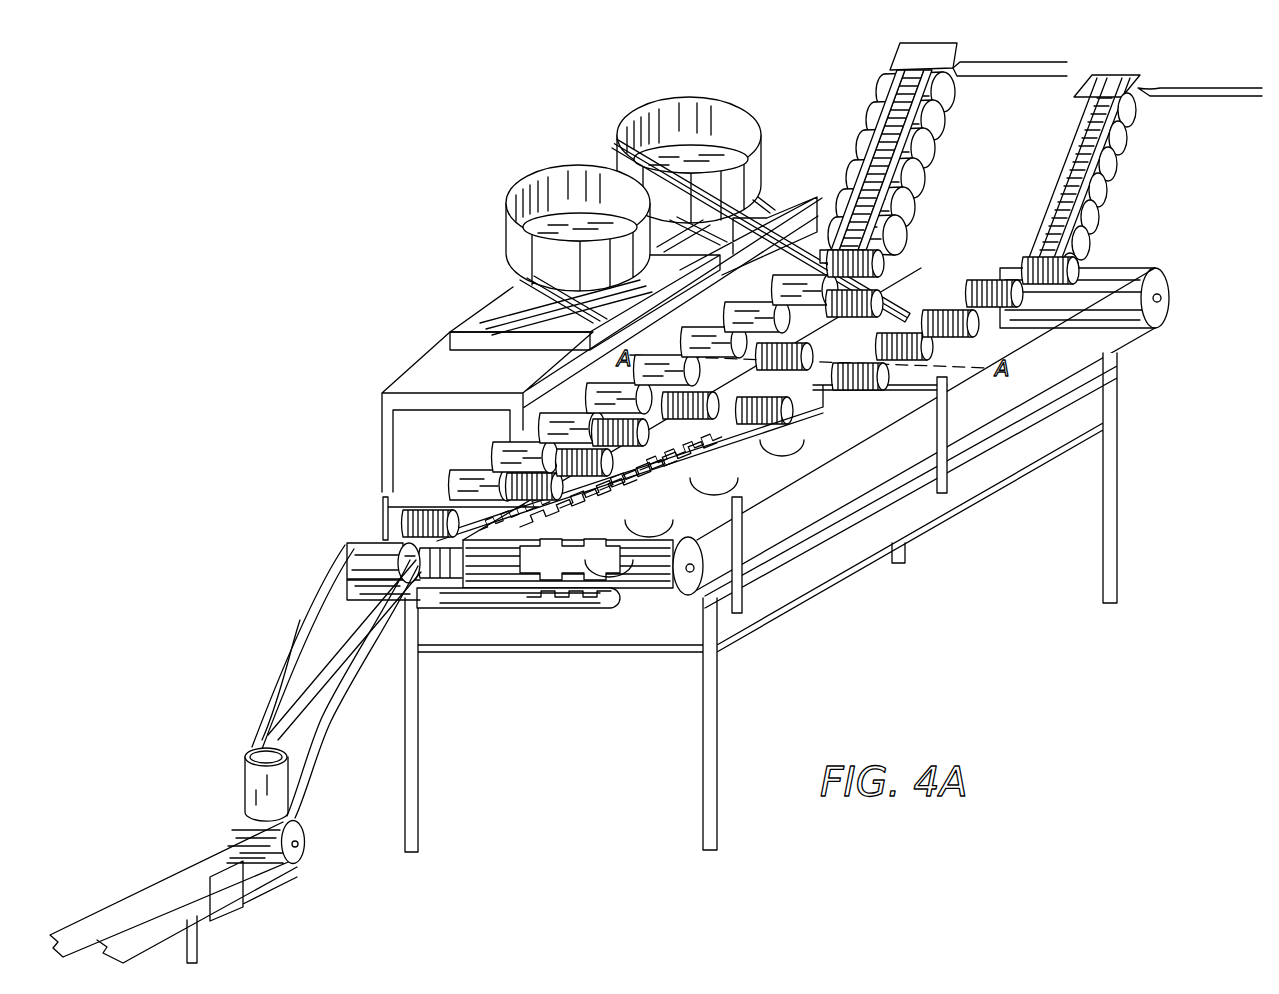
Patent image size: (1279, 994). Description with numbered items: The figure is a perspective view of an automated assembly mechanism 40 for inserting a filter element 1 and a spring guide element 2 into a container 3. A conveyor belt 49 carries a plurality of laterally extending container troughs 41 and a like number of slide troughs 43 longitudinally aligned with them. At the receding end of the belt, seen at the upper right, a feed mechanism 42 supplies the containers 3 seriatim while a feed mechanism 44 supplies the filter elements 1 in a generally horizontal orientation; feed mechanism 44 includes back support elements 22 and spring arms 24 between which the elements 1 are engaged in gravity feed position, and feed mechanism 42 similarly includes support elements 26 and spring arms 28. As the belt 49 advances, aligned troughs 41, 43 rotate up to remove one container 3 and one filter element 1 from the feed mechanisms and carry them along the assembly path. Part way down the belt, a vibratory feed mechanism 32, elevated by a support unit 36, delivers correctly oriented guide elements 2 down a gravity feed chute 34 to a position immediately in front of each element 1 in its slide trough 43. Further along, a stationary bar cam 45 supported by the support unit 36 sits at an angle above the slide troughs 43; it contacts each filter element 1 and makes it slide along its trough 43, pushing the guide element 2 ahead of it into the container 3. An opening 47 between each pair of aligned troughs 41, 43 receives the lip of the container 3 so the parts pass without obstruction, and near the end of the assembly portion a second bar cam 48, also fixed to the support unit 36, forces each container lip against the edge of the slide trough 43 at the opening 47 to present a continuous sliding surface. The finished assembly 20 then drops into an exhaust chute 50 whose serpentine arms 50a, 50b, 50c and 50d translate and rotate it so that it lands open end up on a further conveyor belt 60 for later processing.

The filter element 1 is at (1128, 212).
The guide element 2 is at (668, 393).
The container 3 is at (942, 179).
The assembly 20 is at (228, 786).
The back support element 22 is at (1163, 95).
The spring arm 24 is at (1122, 140).
The support element 26 is at (1012, 70).
The spring arm 28 is at (933, 122).
The vibratory feed mechanism 32 is at (581, 124).
The gravity feed chute 34 is at (776, 232).
The support unit 36 is at (416, 372).
The automated assembly mechanism 40 is at (445, 213).
The container trough 41 is at (753, 323).
The feed mechanism 42 is at (965, 33).
The slide trough 43 is at (1082, 280).
The feed mechanism 44 is at (1150, 55).
The stationary bar cam 45 is at (818, 412).
The opening 47 is at (895, 262).
The second bar cam 48 is at (455, 470).
The conveyor belt 49 is at (1095, 318).
The exhaust chute 50 is at (347, 520).
The arm 50a is at (343, 582).
The arm 50b is at (372, 640).
The arm 50c is at (353, 673).
The arm 50d is at (330, 632).
The further conveyor belt 60 is at (299, 872).